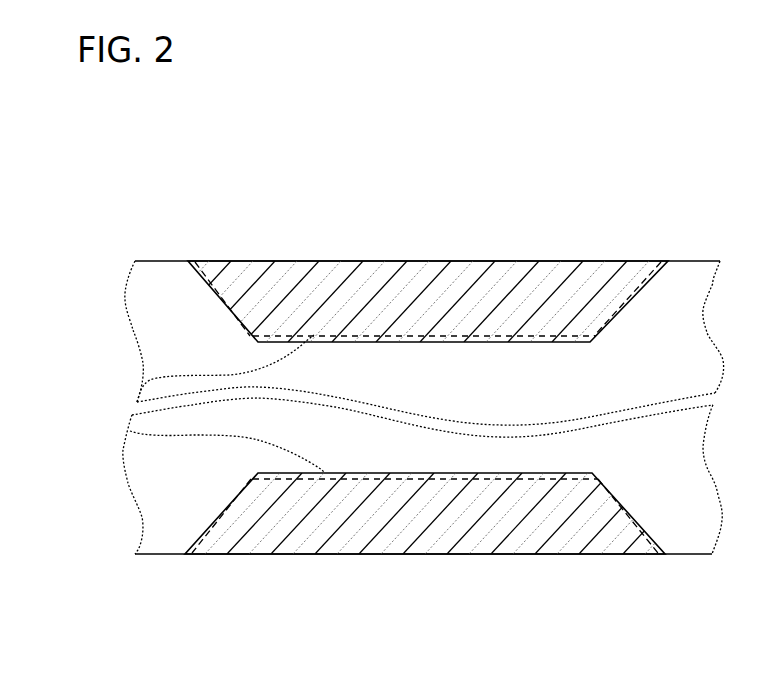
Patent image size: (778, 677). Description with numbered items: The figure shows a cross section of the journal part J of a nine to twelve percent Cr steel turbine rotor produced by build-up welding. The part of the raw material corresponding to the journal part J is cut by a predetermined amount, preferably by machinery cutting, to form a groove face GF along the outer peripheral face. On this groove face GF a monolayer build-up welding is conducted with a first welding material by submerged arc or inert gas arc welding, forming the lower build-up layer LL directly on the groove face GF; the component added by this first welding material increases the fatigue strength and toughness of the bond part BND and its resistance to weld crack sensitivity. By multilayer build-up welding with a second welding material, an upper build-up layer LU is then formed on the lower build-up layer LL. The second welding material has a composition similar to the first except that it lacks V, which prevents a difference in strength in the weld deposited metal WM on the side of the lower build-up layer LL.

The journal part J is at (192, 160).
The weld deposited metal WM is at (311, 260).
The groove face GF is at (508, 342).
The bond part BND is at (248, 330).
The upper build-up layer LU is at (258, 341).
The lower build-up layer LL is at (145, 384).